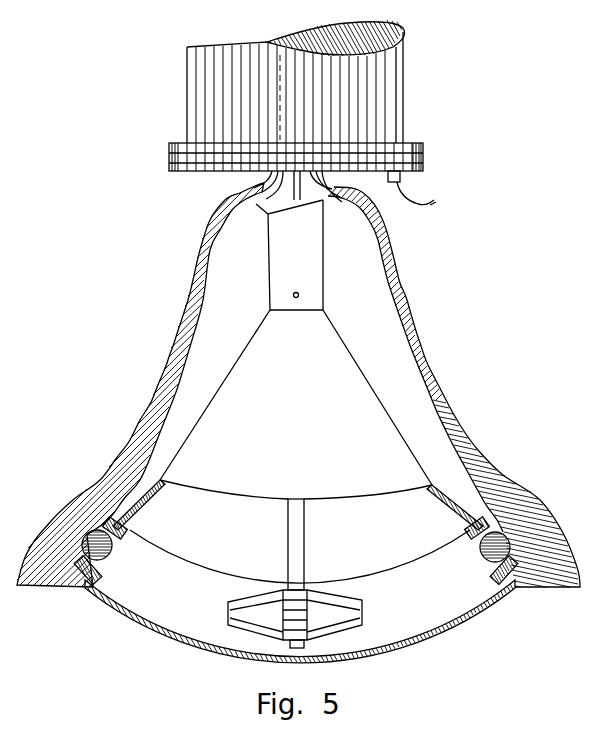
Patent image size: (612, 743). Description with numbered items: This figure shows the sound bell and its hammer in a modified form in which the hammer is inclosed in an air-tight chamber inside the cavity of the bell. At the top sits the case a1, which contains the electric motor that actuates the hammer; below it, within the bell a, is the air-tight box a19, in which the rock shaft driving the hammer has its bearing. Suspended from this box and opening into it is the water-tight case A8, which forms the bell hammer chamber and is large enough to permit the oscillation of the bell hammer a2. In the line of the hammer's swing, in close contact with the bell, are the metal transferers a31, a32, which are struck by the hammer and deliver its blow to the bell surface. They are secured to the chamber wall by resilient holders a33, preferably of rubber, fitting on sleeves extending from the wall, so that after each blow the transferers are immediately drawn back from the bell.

The case a1 is at (405, 103).
The bell-shaped horn body a is at (417, 337).
The air-tight box a19 is at (317, 268).
The water-tight case A8 is at (298, 420).
The balance weight block a2 is at (352, 600).
The transferer a31 is at (110, 557).
The transferer a32 is at (483, 558).
The resilient holder a33 is at (80, 566).